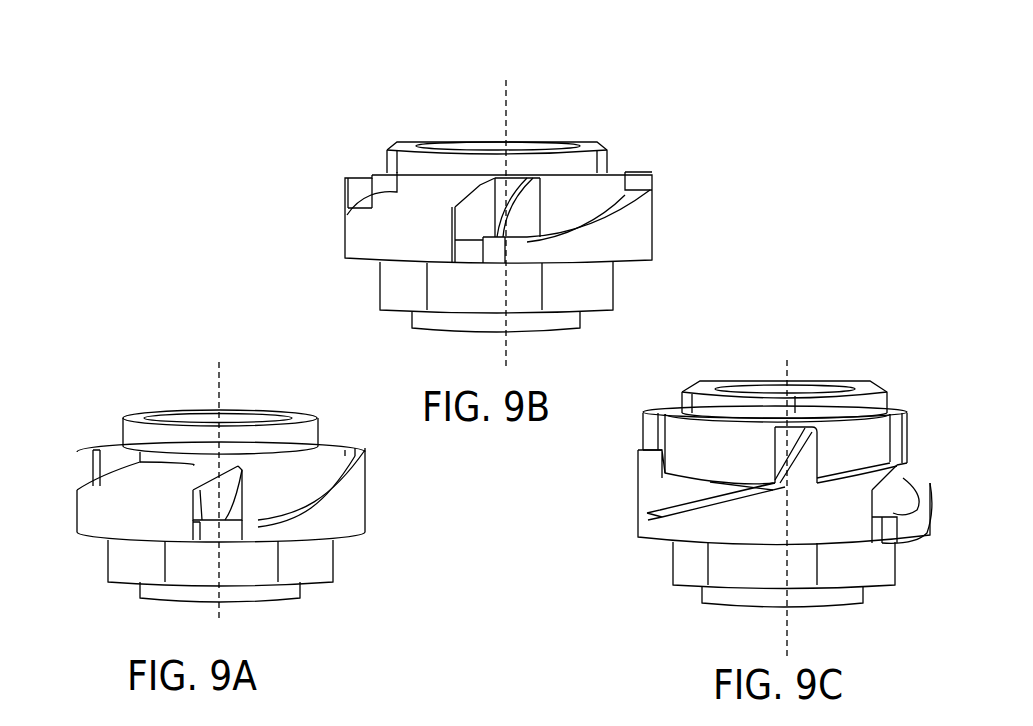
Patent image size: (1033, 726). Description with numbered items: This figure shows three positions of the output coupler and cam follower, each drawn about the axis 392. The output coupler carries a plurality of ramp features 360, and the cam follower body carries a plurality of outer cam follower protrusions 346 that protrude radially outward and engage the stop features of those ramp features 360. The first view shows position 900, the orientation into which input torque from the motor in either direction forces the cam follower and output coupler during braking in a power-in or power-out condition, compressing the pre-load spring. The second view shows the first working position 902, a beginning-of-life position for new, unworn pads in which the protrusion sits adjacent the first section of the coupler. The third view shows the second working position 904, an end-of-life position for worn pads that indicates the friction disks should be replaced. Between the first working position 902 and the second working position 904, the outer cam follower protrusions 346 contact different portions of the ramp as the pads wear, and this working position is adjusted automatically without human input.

In FIG. 9A, the position 900 is at (118, 395).
In FIG. 9B, the first working position 902 is at (608, 101).
In FIG. 9C, the second working position 904 is at (882, 365).
In FIG. 9A, the outer cam follower protrusions 346 is at (232, 477).
In FIG. 9B, the outer cam follower protrusions 346 is at (530, 202).
In FIG. 9C, the outer cam follower protrusions 346 is at (807, 443).
In FIG. 9A, the ramp features 360 is at (103, 524).
In FIG. 9B, the ramp features 360 is at (373, 250).
In FIG. 9C, the ramp features 360 is at (663, 527).
In FIG. 9A, the axis 392 is at (219, 618).
In FIG. 9B, the axis 392 is at (506, 348).
In FIG. 9C, the axis 392 is at (787, 626).